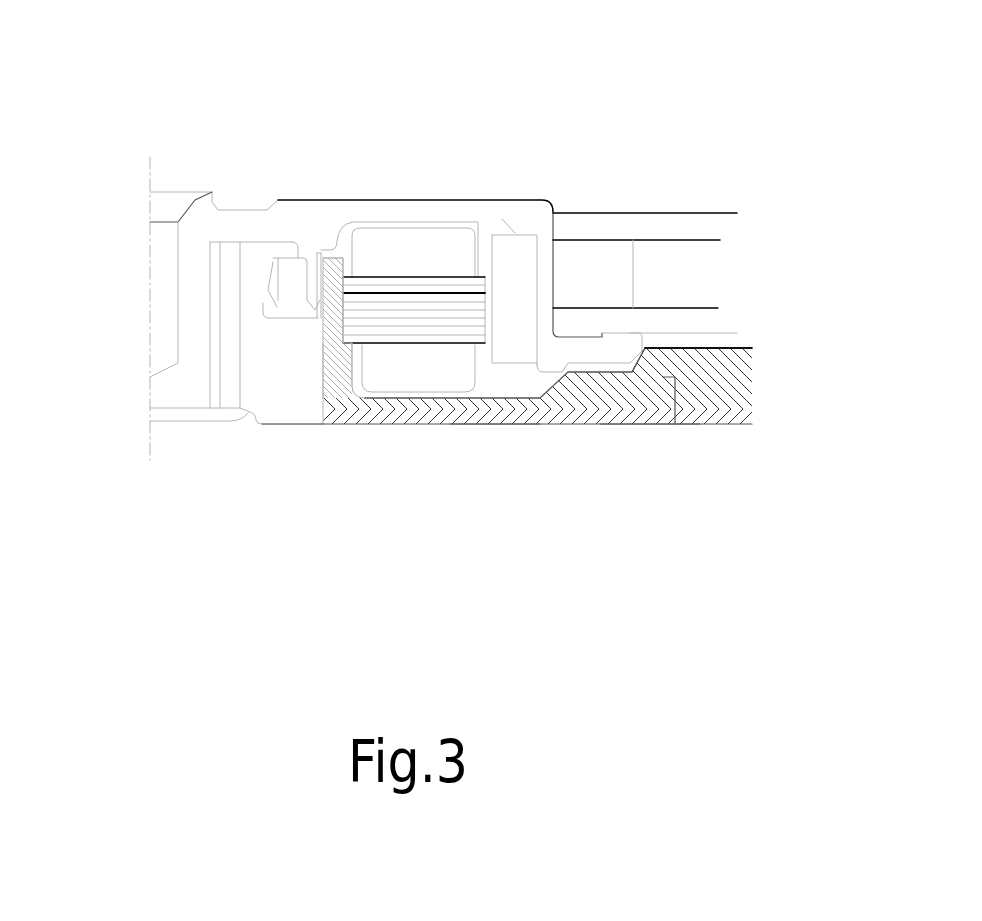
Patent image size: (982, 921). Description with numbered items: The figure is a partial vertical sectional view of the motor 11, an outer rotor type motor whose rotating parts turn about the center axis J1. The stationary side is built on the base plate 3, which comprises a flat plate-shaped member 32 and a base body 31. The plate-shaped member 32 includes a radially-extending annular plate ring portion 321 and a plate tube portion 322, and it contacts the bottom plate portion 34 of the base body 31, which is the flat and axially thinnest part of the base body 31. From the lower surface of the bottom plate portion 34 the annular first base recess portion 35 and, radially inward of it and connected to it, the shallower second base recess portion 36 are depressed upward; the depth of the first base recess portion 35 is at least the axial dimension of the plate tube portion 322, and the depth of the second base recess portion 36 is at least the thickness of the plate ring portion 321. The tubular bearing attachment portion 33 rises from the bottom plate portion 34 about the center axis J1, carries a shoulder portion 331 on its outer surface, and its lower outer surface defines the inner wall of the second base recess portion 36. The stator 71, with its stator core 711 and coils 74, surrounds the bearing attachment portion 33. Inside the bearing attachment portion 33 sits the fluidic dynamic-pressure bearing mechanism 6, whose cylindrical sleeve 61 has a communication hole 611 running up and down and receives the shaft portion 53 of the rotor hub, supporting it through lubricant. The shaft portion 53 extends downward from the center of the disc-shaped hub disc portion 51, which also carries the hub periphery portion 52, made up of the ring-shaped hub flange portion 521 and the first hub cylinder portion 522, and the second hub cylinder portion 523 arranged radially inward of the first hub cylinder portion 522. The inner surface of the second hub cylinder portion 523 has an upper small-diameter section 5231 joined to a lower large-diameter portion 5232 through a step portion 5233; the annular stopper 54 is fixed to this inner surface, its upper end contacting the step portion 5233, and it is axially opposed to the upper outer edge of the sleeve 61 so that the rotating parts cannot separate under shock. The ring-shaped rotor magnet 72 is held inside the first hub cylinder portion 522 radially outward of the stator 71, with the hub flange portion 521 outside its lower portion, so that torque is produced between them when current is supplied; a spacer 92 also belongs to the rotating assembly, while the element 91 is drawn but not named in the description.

The motor 11 is at (828, 90).
The center axis J1 is at (150, 177).
The base plate 3 is at (572, 457).
The base body 31 is at (507, 472).
The plate-shaped member 32 is at (575, 479).
The plate ring portion 321 is at (498, 420).
The plate tube portion 322 is at (672, 405).
The bearing attachment portion 33 is at (337, 368).
The shoulder portion 331 is at (355, 342).
The bottom plate portion 34 is at (422, 407).
The first base recess portion 35 is at (677, 395).
The second base recess portion 36 is at (592, 410).
The hub disc portion 51 is at (410, 208).
The hub periphery portion 52 is at (599, 214).
The hub flange portion 521 is at (592, 348).
The first hub cylinder portion 522 is at (550, 278).
The second hub cylinder portion 523 is at (176, 174).
The small-diameter section 5231 is at (303, 253).
The large-diameter portion 5232 is at (313, 290).
The step portion 5233 is at (290, 258).
The shaft portion 53 is at (158, 382).
The stopper 54 is at (287, 277).
The bearing mechanism 6 is at (178, 424).
The sleeve 61 is at (278, 413).
The communication hole 611 is at (225, 385).
The stator 71 is at (368, 250).
The stator core 711 is at (433, 283).
The rotor magnet 72 is at (505, 260).
The coils 74 is at (415, 181).
The magnet plates 91 is at (712, 318).
The spacer 92 is at (620, 253).